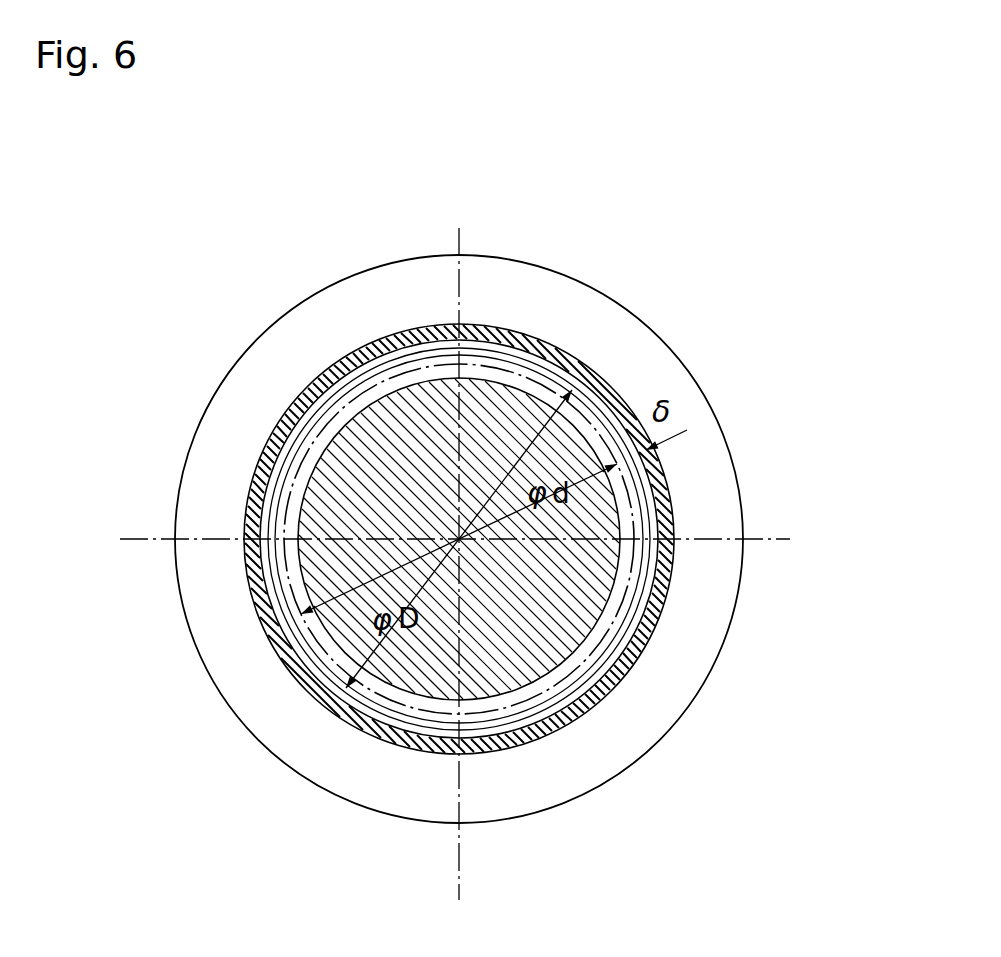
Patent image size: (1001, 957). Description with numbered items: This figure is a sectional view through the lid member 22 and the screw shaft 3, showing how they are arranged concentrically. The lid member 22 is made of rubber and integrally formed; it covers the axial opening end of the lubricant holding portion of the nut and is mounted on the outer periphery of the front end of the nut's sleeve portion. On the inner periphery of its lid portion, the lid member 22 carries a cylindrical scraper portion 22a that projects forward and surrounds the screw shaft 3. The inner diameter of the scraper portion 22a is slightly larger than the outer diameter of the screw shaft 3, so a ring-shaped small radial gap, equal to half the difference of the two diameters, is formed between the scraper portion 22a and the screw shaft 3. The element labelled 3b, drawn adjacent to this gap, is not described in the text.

The lid member 22 is at (510, 257).
The scraper portion 22a is at (574, 358).
The outer peripheral surface of shaft 3b is at (622, 618).
The screw shaft 3 is at (567, 653).